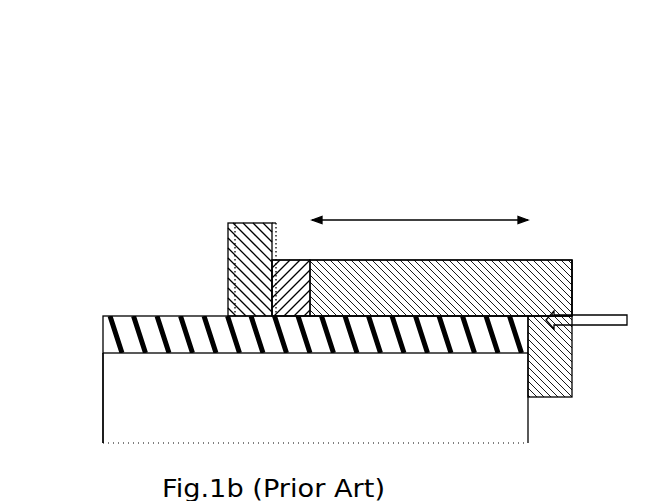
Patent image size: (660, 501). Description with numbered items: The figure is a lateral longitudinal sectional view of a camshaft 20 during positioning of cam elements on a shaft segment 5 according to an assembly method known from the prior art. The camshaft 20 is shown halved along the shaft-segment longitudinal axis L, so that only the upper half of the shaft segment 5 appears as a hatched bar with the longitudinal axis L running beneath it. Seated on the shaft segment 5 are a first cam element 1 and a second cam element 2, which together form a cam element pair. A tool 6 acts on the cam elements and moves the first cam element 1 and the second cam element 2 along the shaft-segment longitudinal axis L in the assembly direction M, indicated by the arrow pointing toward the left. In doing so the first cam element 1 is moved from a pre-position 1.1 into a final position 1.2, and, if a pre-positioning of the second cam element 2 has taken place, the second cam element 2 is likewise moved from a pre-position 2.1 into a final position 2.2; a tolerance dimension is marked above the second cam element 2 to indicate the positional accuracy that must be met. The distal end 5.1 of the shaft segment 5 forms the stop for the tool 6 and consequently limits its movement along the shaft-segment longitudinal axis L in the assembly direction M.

The first cam element 1 is at (227, 270).
The pre-position 1.1 is at (275, 225).
The final position 1.2 is at (229, 222).
The second cam element 2 is at (275, 229).
The pre-position 2.1 is at (357, 262).
The final position 2.2 is at (330, 258).
The shaft segment 5 is at (97, 318).
The distal end 5.1 is at (560, 398).
The tool 6 is at (572, 282).
The camshaft 20 is at (433, 161).
The shaft-segment longitudinal axis L is at (75, 440).
The assembly direction M is at (592, 330).